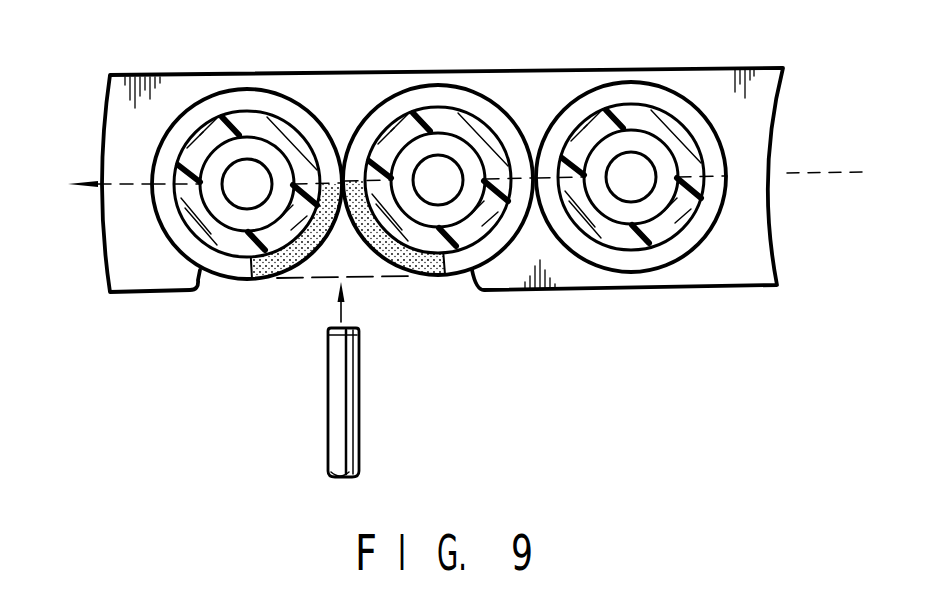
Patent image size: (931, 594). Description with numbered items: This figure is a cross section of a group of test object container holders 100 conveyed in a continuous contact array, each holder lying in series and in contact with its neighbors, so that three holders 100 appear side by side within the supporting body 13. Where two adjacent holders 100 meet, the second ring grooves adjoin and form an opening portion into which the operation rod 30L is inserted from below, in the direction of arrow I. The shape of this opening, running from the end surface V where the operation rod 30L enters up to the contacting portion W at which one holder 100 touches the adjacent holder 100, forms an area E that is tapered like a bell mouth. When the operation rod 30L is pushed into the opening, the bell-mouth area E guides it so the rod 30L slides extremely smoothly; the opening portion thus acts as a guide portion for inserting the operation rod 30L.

The test object container holder 100 is at (247, 88).
The board / base member 13 is at (145, 293).
The operation rod 30L is at (358, 404).
The contacting portion W is at (344, 183).
The area E is at (288, 258).
The end surface V is at (399, 278).
The insertion direction arrow I is at (351, 304).